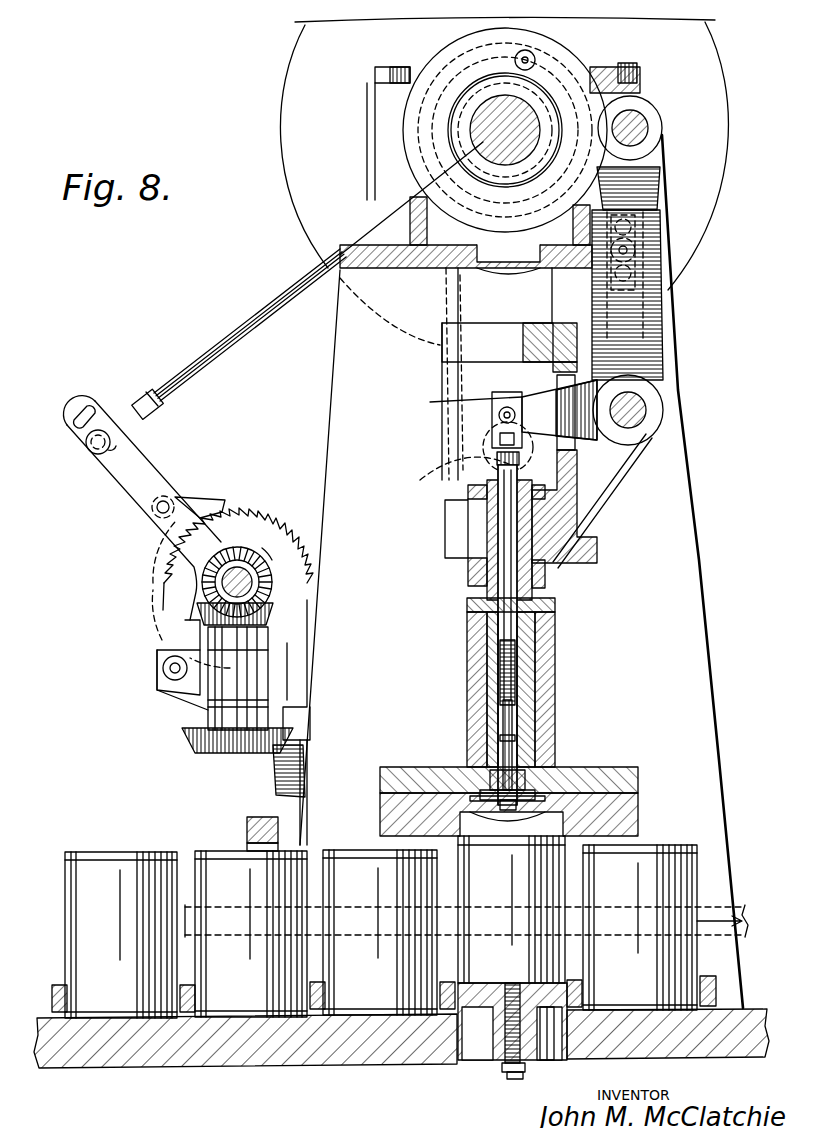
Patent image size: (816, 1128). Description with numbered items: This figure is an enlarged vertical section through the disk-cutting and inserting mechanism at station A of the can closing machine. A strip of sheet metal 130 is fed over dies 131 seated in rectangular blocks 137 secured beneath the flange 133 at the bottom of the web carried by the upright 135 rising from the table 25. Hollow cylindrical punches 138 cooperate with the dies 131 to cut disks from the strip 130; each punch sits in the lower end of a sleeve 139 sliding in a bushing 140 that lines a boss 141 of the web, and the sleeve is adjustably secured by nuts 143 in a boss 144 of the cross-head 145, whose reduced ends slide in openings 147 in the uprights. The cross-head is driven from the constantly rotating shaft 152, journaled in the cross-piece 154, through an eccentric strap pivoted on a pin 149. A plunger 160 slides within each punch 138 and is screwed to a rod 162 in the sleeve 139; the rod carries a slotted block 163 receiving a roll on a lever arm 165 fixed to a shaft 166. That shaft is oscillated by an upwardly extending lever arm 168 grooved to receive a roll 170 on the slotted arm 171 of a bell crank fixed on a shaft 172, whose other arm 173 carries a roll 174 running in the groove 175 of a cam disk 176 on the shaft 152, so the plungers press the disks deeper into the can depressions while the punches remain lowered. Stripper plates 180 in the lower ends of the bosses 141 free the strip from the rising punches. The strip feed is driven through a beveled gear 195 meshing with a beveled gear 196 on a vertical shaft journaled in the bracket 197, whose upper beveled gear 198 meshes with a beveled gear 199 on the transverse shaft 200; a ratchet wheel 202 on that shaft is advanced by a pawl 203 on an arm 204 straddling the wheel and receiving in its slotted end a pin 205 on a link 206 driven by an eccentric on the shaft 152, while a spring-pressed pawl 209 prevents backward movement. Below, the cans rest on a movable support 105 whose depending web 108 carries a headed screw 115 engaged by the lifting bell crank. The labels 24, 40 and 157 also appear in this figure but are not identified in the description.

The feed roller 24 is at (212, 860).
The table 25 is at (382, 1040).
The spacer block 40 is at (52, 997).
The movable support 105 is at (546, 1060).
The depending web 108 is at (490, 1052).
The headed screw 115 is at (513, 1082).
The strip of sheet metal 130 is at (512, 792).
The dies 131 is at (522, 776).
The horizontally extending flange 133 is at (612, 766).
The upright 135 is at (690, 643).
The rectangular blocks 137 is at (628, 800).
The punches 138 is at (528, 742).
The sleeves 139 is at (530, 682).
The bushings 140 is at (545, 622).
The bosses 141 is at (470, 645).
The nuts 143 is at (468, 572).
The bosses of cross-head 144 is at (568, 520).
The cross-head 145 is at (440, 441).
The openings 147 is at (470, 312).
The pin 149 is at (445, 470).
The shaft 152 is at (483, 142).
The cross-piece 154 is at (300, 252).
The lever 157 is at (622, 472).
The plungers 160 is at (498, 768).
The rods 162 is at (500, 665).
The block 163 is at (490, 410).
The lever arm 165 is at (533, 405).
The shaft 166 is at (640, 410).
The lever arm 168 is at (640, 362).
The roll 170 is at (645, 255).
The arm of bell crank 171 is at (632, 190).
The shaft 172 is at (645, 128).
The other arm of bell crank 173 is at (615, 85).
The roll 174 is at (305, 83).
The groove 175 is at (458, 62).
The cam disk 176 is at (410, 120).
The stripper plates 180 is at (488, 795).
The beveled gear 195 is at (306, 762).
The beveled gear 196 is at (186, 740).
The bracket 197 is at (300, 655).
The beveled gear 198 is at (270, 618).
The beveled gear 199 is at (268, 550).
The shaft 200 is at (240, 575).
The ratchet wheel 202 is at (170, 584).
The pawl 203 is at (200, 498).
The arm 204 is at (158, 472).
The pin 205 is at (92, 465).
The link 206 is at (222, 345).
The spring-pressed pawl 209 is at (152, 628).